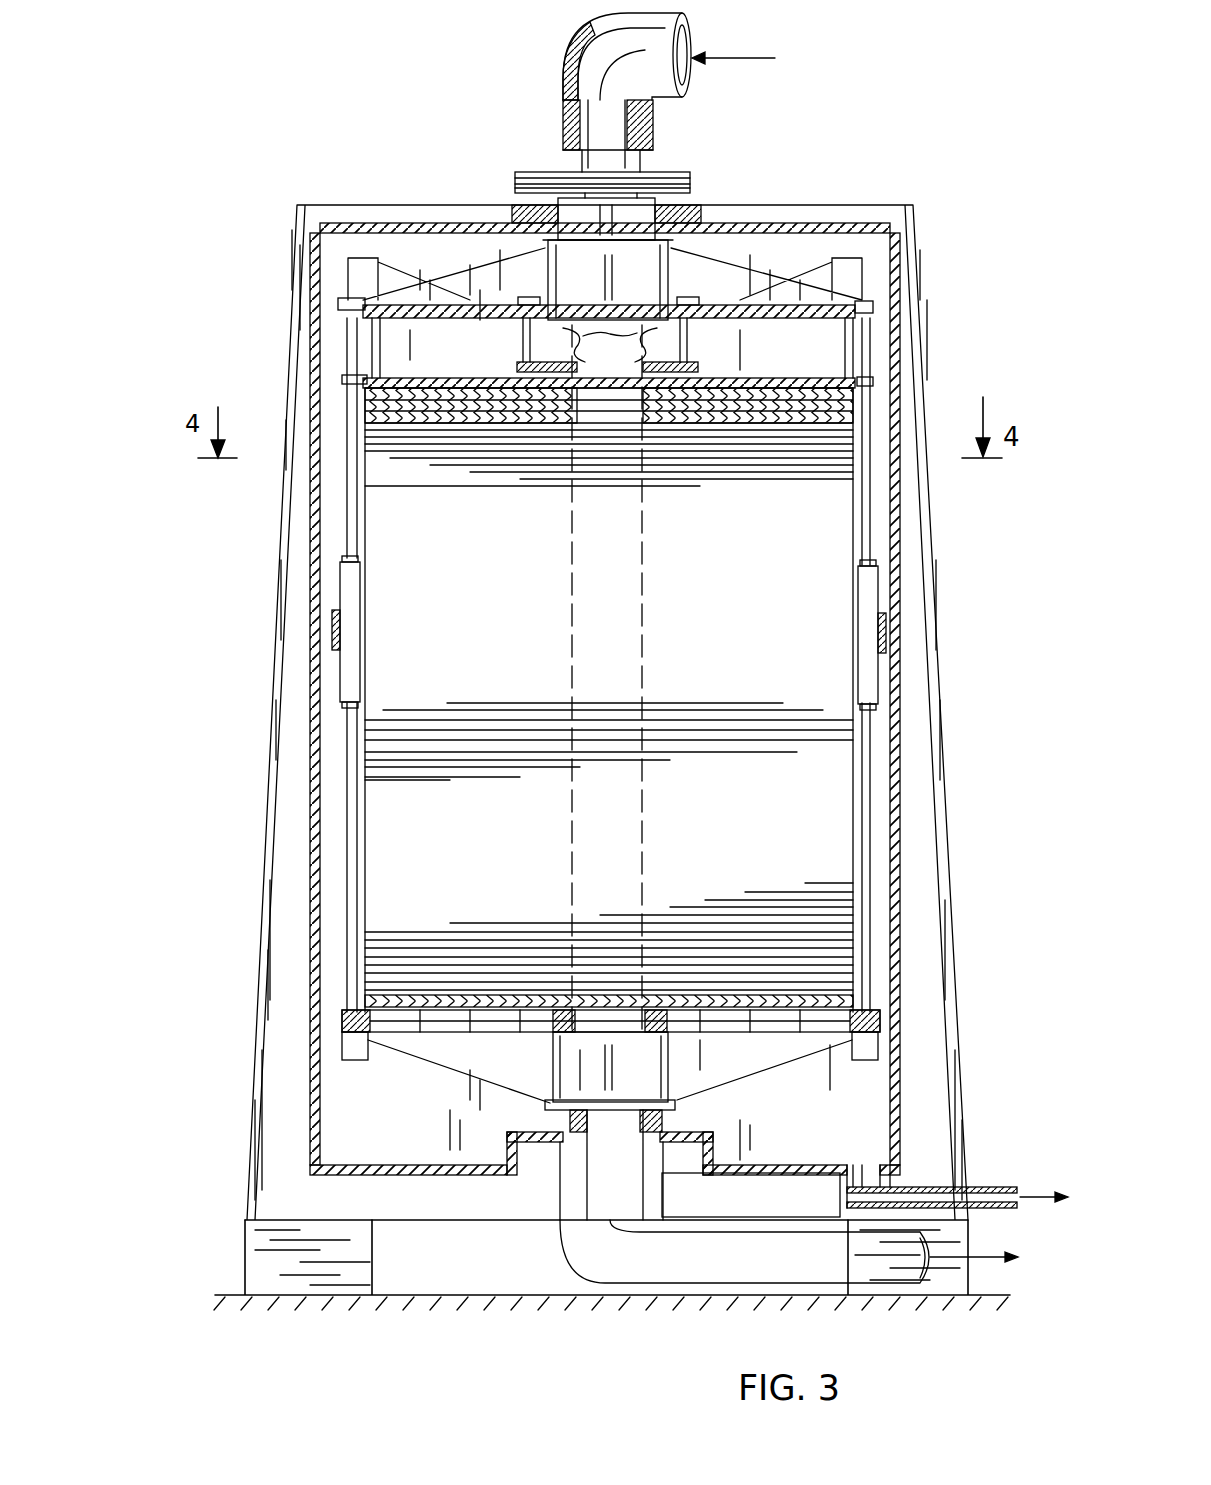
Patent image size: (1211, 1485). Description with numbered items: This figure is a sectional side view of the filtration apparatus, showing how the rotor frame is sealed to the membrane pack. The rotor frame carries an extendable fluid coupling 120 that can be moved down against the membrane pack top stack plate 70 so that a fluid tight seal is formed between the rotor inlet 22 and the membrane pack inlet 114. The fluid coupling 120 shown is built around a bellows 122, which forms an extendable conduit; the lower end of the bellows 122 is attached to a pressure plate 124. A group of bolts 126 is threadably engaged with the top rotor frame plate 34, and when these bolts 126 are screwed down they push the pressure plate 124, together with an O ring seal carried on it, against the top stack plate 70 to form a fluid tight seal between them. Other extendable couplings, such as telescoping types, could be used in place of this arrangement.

The rotor inlet 22 is at (612, 98).
The bolts 126 is at (507, 258).
The top rotor frame plate 34 is at (867, 323).
The bellows 122 is at (690, 352).
The extendable fluid coupling 120 is at (660, 345).
The pressure plate 124 is at (700, 366).
The membrane pack top stack plate 70 is at (365, 377).
The membrane pack inlet 114 is at (575, 367).